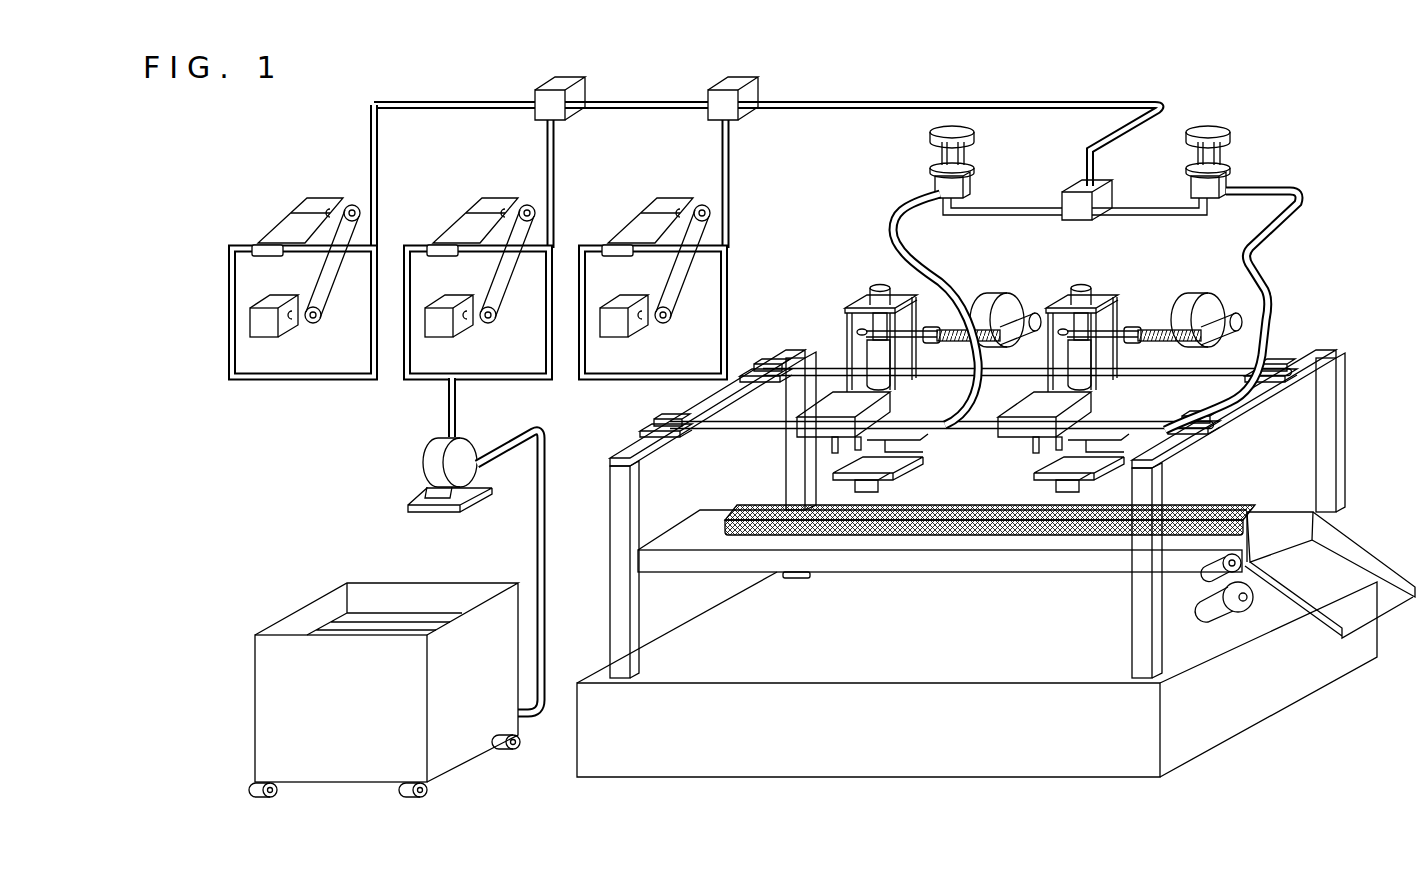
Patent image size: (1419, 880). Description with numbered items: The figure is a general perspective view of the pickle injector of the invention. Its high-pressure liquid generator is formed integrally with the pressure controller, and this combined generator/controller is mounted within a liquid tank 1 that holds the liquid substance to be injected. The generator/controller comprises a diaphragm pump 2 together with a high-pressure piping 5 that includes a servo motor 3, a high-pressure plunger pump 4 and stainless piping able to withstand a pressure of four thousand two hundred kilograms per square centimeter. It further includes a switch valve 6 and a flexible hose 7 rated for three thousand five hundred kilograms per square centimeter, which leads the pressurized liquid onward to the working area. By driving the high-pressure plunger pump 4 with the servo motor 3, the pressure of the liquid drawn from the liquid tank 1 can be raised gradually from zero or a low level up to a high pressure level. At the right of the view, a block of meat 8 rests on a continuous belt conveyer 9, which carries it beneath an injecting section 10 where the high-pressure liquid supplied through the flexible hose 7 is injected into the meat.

The liquid tank 1 is at (354, 726).
The diaphragm pump 2 is at (421, 464).
The servo motor 3 is at (640, 333).
The high-pressure plunger pump 4 is at (654, 197).
The high-pressure piping 5 is at (456, 100).
The switch valve 6 is at (1233, 140).
The flexible hose 7 is at (893, 231).
The block of meat 8 is at (1216, 506).
The continuous belt conveyer 9 is at (1020, 576).
The injecting section 10 is at (1052, 491).